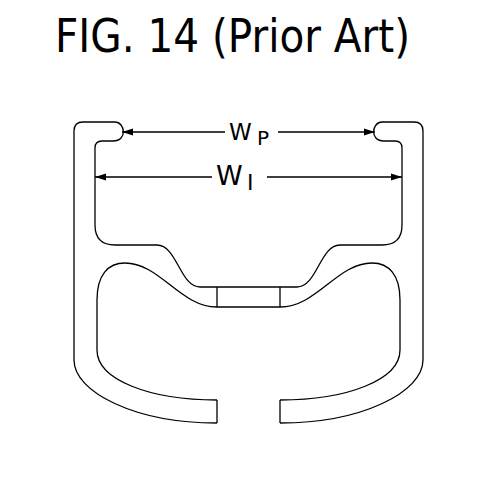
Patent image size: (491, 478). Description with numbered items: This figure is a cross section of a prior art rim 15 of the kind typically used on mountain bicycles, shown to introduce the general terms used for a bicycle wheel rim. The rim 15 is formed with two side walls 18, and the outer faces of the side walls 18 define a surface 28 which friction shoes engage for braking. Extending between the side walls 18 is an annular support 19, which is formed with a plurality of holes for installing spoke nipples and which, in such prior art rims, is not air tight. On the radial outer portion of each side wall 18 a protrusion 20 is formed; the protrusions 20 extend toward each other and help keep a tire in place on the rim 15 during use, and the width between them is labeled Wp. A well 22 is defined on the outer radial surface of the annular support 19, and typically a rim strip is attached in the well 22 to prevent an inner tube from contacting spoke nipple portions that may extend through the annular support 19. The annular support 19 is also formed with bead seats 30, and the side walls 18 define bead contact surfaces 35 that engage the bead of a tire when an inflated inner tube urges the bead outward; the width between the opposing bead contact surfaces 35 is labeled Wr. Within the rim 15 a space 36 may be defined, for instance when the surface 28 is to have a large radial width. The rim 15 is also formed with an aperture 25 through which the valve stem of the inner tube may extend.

The rim 15 is at (369, 429).
The side walls 18 is at (83, 185).
The annular support 19 is at (329, 276).
The protrusions 20 is at (114, 128).
The well 22 is at (255, 270).
The aperture 25 is at (218, 289).
The surface 28 is at (424, 262).
The bead seats 30 is at (130, 244).
The bead contact surfaces 35 is at (95, 190).
The space 36 is at (348, 360).